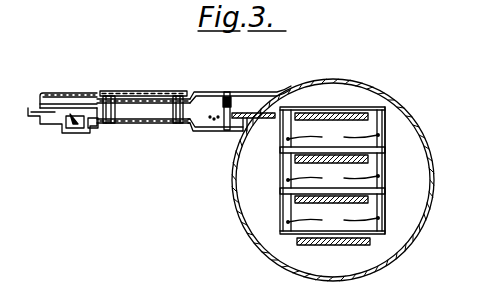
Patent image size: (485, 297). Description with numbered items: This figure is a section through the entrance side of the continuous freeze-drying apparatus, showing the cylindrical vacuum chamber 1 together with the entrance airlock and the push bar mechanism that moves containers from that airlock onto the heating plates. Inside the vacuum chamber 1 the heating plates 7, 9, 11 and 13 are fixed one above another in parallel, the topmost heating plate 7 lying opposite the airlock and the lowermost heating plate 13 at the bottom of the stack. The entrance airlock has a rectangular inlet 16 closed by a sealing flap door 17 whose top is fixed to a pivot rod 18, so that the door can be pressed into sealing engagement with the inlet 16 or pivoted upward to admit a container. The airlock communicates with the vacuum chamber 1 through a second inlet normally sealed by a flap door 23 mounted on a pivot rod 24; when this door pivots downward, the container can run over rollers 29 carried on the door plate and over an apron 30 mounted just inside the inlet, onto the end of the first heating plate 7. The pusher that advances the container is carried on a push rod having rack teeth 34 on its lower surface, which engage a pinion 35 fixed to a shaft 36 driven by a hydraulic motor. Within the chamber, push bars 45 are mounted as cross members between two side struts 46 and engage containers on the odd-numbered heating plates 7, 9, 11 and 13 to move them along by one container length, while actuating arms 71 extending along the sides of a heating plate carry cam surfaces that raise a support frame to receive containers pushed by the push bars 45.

The vacuum chamber 1 is at (435, 173).
The topmost heating plate 7 is at (330, 113).
The heating plate 9 is at (299, 164).
The heating plate 11 is at (292, 208).
The lowermost heating plate 13 is at (343, 246).
The rectangular inlet 16 is at (121, 97).
The sealing flap door 17 is at (160, 110).
The pivot rod 18 is at (155, 92).
The flap door 23 is at (226, 96).
The pivot rod 24 is at (230, 131).
The rollers 29 is at (234, 97).
The apron 30 is at (264, 121).
The rack teeth 34 is at (55, 121).
The pinion 35 is at (72, 133).
The shaft 36 is at (90, 129).
The push bars 45 is at (372, 107).
The side struts 46 is at (384, 167).
The actuating arms 71 is at (333, 179).